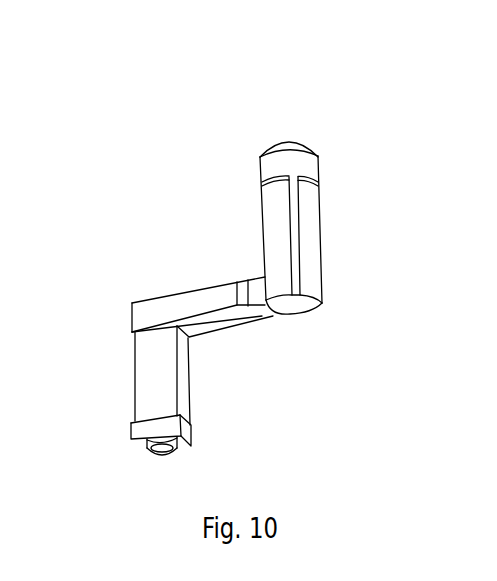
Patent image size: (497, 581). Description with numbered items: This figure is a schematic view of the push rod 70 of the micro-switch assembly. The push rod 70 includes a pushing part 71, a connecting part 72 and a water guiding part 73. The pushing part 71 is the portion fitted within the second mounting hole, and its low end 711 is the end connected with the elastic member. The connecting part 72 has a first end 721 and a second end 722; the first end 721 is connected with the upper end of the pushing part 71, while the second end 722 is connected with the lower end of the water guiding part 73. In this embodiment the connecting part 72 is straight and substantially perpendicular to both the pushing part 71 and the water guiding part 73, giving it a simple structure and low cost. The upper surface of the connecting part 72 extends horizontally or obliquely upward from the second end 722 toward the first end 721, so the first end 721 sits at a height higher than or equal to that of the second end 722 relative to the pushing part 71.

The push rod 70 is at (295, 63).
The pushing part 71 is at (172, 404).
The low end of the pushing part 711 is at (189, 438).
The connecting part 72 is at (218, 290).
The first end 721 is at (140, 302).
The second end 722 is at (260, 313).
The water guiding part 73 is at (320, 240).